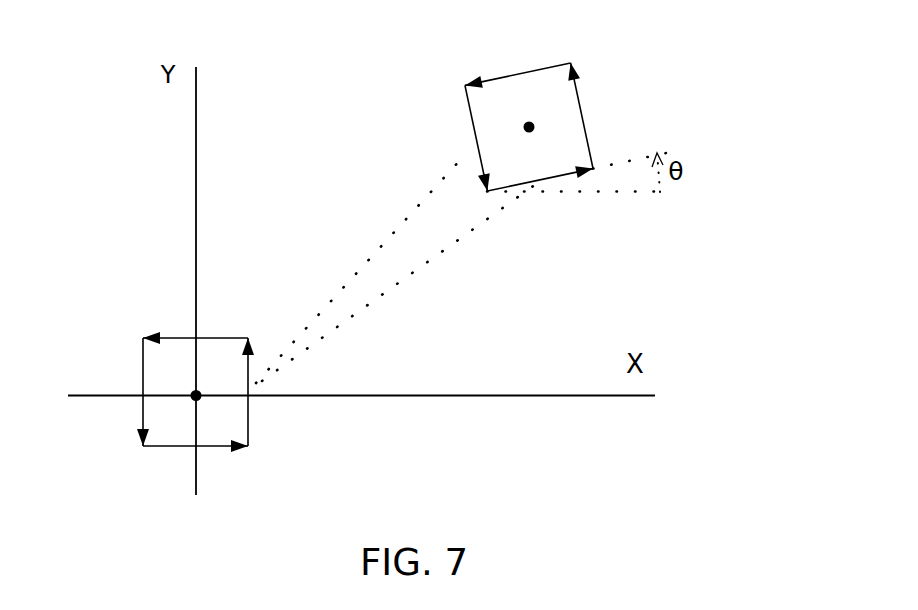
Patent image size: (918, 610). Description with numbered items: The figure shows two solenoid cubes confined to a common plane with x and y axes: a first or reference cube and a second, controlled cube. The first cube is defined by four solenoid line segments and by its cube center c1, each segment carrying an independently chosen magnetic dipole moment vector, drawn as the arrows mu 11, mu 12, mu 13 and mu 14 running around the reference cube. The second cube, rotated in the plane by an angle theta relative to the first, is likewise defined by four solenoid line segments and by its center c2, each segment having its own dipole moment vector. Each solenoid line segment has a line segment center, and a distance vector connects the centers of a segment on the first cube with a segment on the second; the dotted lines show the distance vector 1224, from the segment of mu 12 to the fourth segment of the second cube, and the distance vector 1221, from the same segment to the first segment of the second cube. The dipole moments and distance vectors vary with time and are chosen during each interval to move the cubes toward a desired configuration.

The magnetic dipole moment vector of first-cube solenoid line segment (1,1) 11 is at (195, 464).
The magnetic dipole moment vector of first-cube solenoid line segment (1,2) 12 is at (269, 392).
The magnetic dipole moment vector of first-cube solenoid line segment (1,3) 13 is at (195, 322).
The magnetic dipole moment vector of first-cube solenoid line segment (1,4) 14 is at (122, 392).
The cube center of first cube c1 is at (206, 382).
The center of second cube c2 is at (537, 143).
The distance vector d_ 1224 is at (359, 270).
The distance vector d_ 1221 is at (399, 282).